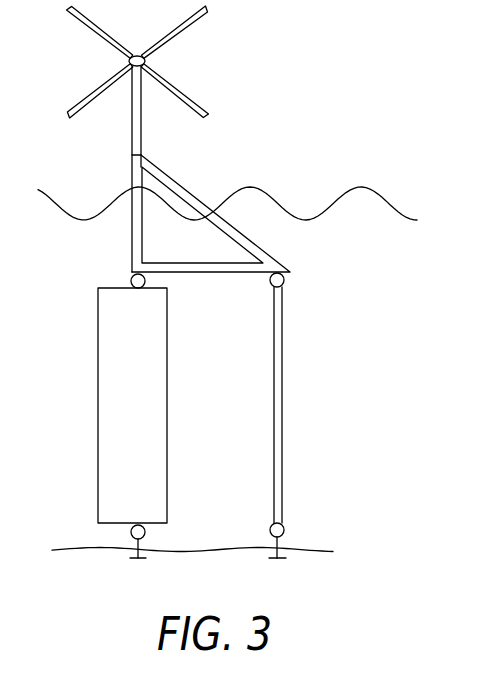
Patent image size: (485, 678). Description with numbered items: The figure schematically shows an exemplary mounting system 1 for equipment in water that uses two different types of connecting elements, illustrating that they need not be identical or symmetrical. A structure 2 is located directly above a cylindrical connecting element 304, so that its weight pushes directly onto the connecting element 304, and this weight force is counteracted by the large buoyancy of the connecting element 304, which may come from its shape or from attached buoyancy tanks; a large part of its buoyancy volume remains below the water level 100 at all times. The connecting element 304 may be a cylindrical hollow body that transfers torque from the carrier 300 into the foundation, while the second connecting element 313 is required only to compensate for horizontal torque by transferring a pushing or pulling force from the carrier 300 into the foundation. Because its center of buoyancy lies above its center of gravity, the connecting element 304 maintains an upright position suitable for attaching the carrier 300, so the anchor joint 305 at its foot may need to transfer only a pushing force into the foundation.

The mounting system 1 is at (237, 209).
The structure 2 is at (132, 114).
The water level 100 is at (362, 186).
The carrier 300 is at (159, 167).
The connecting element 304 is at (108, 314).
The anchor joint 305 is at (142, 535).
The connecting element 313 is at (281, 313).